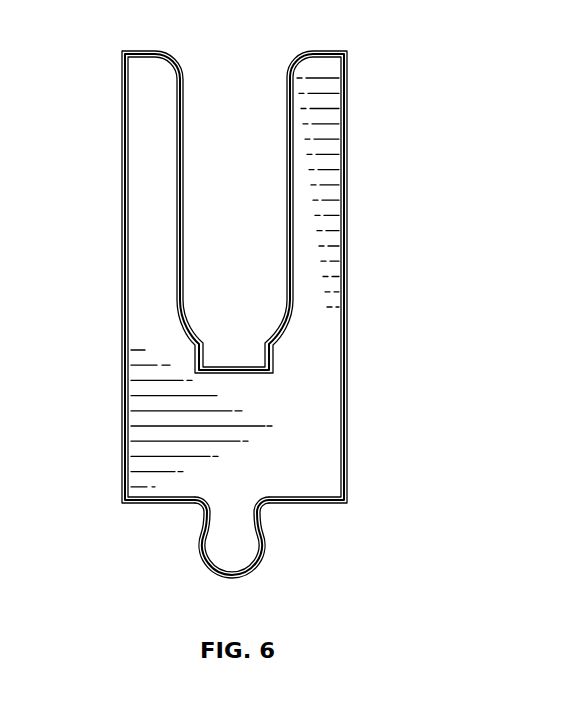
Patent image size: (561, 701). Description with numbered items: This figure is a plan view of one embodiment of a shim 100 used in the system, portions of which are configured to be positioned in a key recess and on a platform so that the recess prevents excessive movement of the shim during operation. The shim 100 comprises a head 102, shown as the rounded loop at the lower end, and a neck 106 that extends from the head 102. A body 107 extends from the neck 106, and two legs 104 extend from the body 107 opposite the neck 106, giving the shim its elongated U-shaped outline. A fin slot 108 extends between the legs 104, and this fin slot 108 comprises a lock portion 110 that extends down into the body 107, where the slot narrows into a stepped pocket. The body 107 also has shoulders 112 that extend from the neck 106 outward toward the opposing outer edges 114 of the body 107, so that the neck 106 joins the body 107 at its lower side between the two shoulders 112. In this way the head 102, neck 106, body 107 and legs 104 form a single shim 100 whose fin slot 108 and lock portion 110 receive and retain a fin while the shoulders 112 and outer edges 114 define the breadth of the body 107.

The shim 100 is at (371, 35).
The head 102 is at (219, 539).
The legs 104 is at (146, 131).
The neck 106 is at (237, 503).
The body 107 is at (198, 437).
The fin slot 108 is at (182, 127).
The lock portion 110 is at (205, 357).
The shoulders 112 is at (146, 505).
The outer edges 114 is at (122, 433).